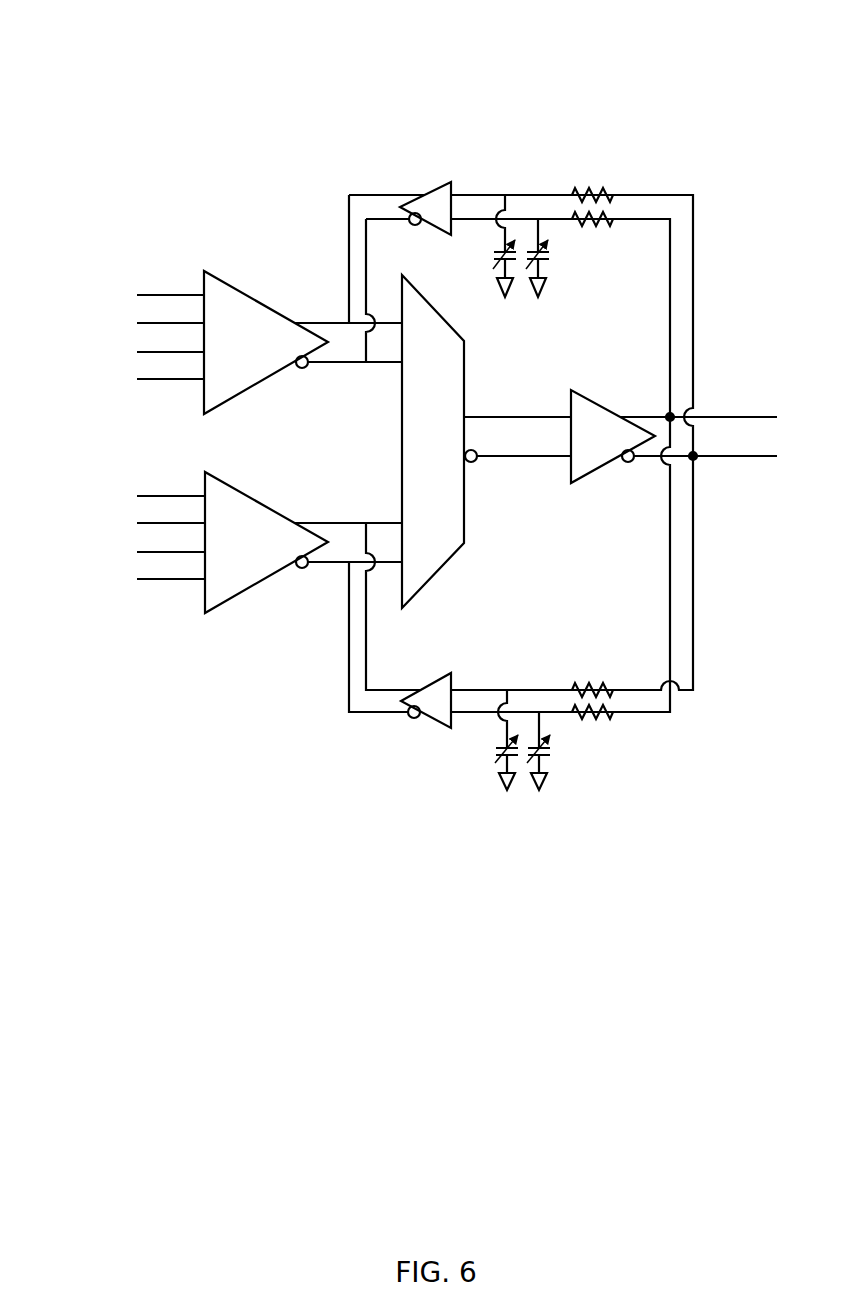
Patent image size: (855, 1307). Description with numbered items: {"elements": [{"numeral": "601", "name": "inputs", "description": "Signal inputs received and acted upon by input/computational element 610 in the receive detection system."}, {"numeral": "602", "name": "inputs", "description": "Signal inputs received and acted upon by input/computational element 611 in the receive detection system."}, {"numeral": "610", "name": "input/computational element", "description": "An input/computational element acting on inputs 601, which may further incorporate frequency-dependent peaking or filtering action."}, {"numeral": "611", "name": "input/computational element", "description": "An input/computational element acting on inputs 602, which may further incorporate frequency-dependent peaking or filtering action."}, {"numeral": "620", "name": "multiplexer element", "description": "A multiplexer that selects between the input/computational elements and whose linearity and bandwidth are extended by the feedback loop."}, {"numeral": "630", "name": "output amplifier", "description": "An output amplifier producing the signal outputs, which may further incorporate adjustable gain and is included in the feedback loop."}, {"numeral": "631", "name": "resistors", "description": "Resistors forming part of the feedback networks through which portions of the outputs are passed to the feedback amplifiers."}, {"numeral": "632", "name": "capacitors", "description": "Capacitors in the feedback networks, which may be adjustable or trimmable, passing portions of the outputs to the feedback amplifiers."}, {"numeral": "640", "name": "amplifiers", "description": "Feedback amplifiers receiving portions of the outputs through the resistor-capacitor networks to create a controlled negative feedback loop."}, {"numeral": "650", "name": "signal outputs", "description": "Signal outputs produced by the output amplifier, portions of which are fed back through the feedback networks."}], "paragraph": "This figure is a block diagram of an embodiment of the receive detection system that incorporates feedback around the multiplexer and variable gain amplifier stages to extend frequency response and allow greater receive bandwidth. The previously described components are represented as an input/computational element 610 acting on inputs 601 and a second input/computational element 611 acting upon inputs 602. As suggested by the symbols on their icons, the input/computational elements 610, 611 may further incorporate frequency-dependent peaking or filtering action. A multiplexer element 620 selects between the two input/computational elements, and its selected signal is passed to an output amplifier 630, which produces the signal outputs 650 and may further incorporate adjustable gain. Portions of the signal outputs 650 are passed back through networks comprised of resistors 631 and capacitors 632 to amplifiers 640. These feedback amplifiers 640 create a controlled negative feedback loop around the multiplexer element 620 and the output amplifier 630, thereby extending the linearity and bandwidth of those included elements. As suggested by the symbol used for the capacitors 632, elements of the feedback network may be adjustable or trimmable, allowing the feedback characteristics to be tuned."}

The first differential input signals 601 is at (103, 325).
The second differential input signals 602 is at (106, 533).
The first input buffer 610 is at (246, 288).
The second input buffer 611 is at (254, 591).
The multiplexer 620 is at (467, 498).
The output buffer 630 is at (606, 406).
The resistors 631 is at (600, 196).
The variable capacitors 632 is at (519, 232).
The feedback inverters 640 is at (427, 189).
The differential output 650 is at (779, 434).